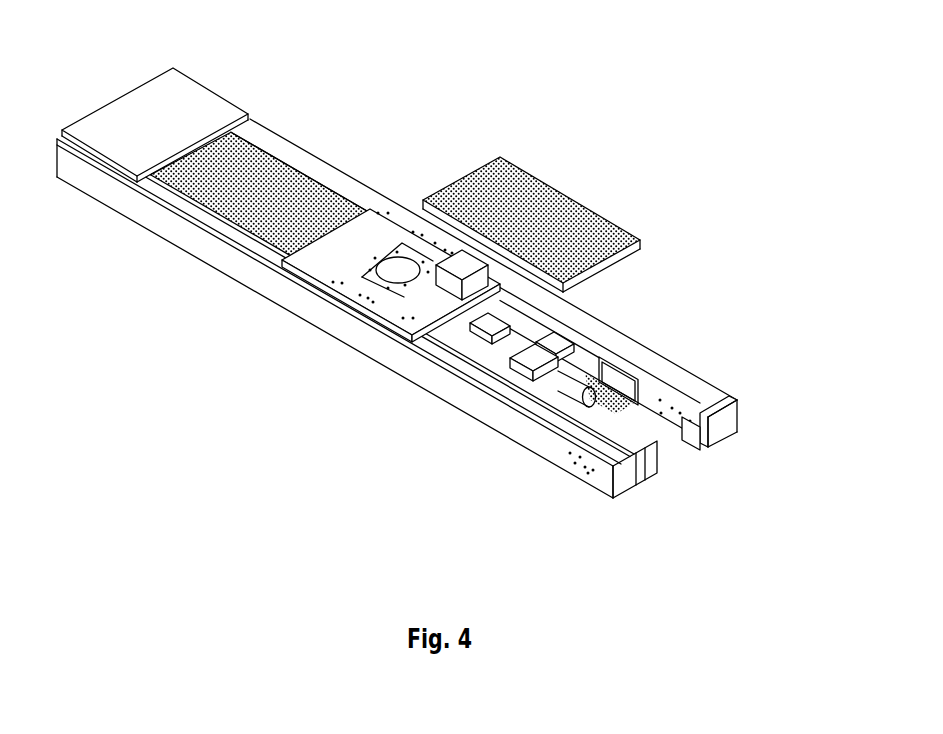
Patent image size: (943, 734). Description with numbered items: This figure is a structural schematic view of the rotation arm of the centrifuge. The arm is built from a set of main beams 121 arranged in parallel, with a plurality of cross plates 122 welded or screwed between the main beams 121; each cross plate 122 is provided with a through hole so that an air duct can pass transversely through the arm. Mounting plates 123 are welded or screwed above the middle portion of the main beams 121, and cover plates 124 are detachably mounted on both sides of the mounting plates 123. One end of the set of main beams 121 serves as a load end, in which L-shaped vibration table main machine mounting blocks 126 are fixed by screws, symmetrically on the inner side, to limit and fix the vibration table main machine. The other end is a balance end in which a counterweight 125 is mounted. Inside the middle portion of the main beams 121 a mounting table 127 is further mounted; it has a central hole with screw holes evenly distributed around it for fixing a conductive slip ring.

The main beam 121 is at (686, 378).
The cross plate 122 is at (516, 357).
The mounting plate 123 is at (332, 282).
The cover plate 124 is at (280, 185).
The counterweight 125 is at (177, 93).
The vibration table main machine mounting block 126 is at (737, 398).
The mounting table 127 is at (437, 297).